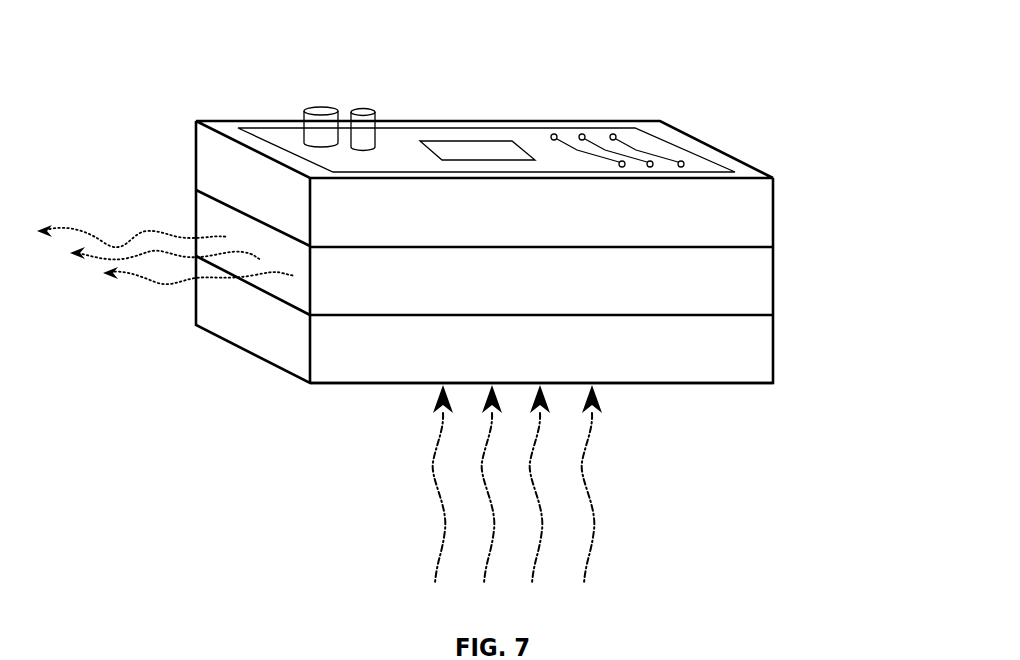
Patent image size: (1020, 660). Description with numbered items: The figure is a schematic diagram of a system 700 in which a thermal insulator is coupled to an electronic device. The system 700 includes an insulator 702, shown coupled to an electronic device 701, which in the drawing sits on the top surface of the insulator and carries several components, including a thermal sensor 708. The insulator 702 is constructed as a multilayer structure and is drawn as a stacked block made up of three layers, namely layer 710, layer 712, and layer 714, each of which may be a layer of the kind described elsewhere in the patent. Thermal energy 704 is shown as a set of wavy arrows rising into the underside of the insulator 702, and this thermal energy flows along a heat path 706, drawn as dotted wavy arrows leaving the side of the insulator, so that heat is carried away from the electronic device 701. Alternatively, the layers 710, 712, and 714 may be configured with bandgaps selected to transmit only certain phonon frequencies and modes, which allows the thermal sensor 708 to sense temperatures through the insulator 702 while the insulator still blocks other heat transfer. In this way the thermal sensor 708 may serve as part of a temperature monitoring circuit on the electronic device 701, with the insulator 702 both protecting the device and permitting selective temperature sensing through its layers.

The system 700 is at (216, 90).
The electronic device 701 is at (432, 133).
The insulator 702 is at (196, 204).
The thermal energy 704 is at (610, 502).
The heat path 706 is at (168, 290).
The thermal sensor 708 is at (513, 143).
The layer 710 is at (773, 207).
The layer 712 is at (773, 278).
The layer 714 is at (773, 347).